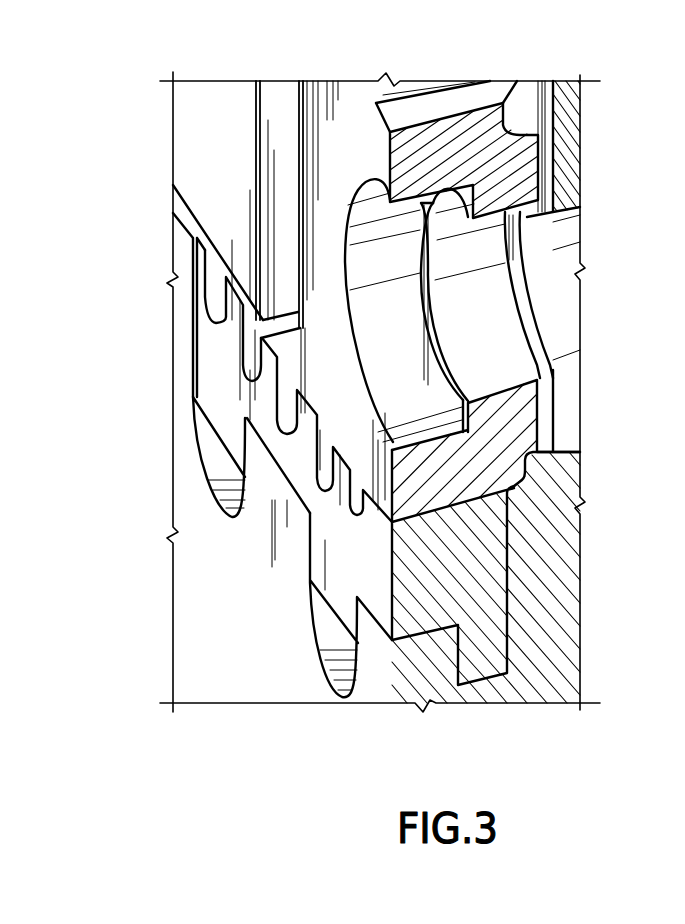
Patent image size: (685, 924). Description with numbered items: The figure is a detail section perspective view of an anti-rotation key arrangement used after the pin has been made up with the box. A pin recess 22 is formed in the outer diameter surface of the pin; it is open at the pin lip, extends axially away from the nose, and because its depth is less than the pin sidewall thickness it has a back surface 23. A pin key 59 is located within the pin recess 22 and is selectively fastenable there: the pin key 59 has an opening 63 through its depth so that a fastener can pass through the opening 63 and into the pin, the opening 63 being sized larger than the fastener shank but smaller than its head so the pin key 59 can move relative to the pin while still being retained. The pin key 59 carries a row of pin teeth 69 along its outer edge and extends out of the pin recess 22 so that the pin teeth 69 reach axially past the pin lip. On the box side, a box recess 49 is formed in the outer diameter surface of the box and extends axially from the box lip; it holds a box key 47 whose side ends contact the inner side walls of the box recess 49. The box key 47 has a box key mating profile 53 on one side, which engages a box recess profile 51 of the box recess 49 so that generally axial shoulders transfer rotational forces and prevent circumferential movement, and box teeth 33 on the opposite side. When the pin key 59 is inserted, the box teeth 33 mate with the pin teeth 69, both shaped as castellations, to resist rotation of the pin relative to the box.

The pin recess 22 is at (273, 135).
The back surface 23 is at (540, 100).
The box teeth 33 is at (300, 413).
The box key 47 is at (340, 697).
The box recess 49 is at (497, 580).
The box recess profile 51 is at (325, 428).
The box key mating profile 53 is at (330, 570).
The pin key 59 is at (520, 420).
The opening 63 is at (367, 217).
The pin teeth 69 is at (330, 455).